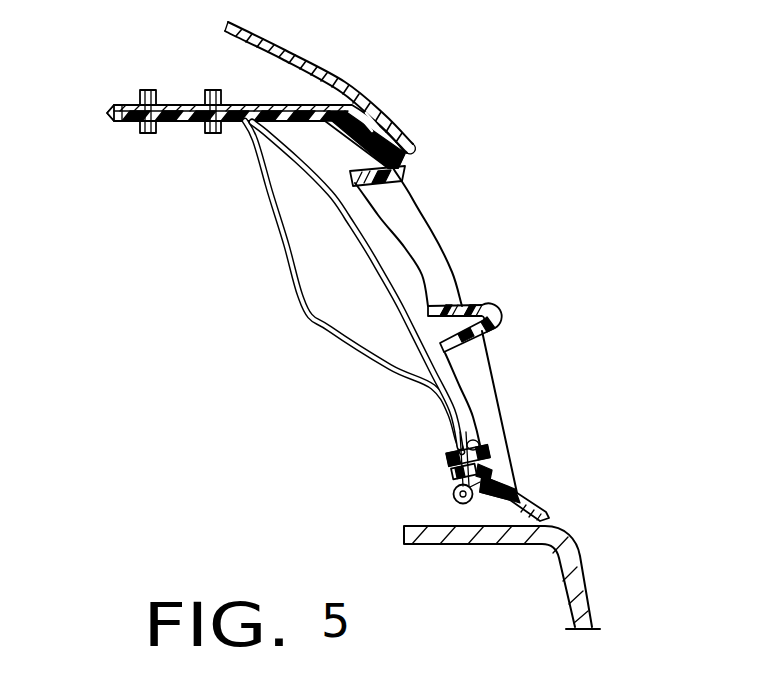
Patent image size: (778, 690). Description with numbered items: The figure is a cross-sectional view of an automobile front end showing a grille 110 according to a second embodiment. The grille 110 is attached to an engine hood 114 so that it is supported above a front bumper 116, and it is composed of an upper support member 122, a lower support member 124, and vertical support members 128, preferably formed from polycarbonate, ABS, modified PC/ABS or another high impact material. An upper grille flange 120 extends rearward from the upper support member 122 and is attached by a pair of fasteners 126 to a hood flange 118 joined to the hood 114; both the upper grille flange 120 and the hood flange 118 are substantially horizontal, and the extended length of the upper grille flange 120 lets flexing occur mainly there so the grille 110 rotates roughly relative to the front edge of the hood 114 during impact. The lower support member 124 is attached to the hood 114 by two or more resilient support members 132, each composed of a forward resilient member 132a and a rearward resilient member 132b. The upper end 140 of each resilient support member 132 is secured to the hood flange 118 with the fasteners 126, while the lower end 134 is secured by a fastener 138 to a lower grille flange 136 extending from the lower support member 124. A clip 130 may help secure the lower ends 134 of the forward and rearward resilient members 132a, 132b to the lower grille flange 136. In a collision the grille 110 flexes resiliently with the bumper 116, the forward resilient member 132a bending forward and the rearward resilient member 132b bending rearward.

The grille 110 is at (476, 330).
The engine hood 114 is at (312, 66).
The front bumper 116 is at (575, 574).
The hood flange 118 is at (283, 105).
The upper grille flange 120 is at (116, 125).
The upper support member 122 is at (403, 167).
The lower support member 124 is at (528, 493).
The fasteners 126 is at (207, 100).
The vertical support members 128 is at (438, 265).
The clip 130 is at (453, 503).
The resilient support members 132 is at (309, 286).
The forward resilient member 132a is at (388, 293).
The rearward resilient member 132b is at (280, 242).
The lower end 134 is at (452, 480).
The lower grille flange 136 is at (487, 476).
The fastener 138 is at (484, 451).
The upper end 140 is at (188, 123).